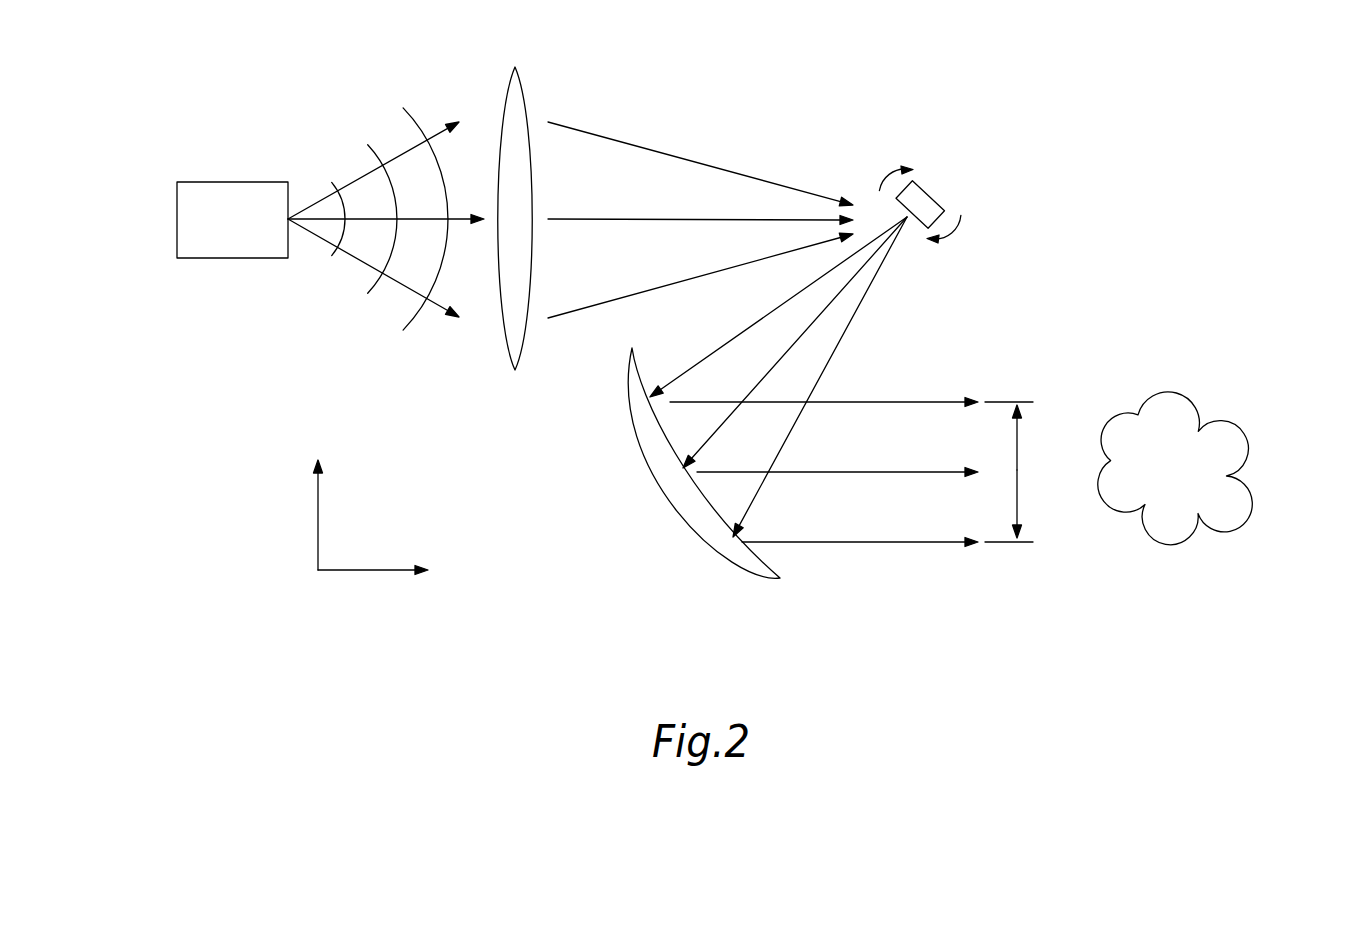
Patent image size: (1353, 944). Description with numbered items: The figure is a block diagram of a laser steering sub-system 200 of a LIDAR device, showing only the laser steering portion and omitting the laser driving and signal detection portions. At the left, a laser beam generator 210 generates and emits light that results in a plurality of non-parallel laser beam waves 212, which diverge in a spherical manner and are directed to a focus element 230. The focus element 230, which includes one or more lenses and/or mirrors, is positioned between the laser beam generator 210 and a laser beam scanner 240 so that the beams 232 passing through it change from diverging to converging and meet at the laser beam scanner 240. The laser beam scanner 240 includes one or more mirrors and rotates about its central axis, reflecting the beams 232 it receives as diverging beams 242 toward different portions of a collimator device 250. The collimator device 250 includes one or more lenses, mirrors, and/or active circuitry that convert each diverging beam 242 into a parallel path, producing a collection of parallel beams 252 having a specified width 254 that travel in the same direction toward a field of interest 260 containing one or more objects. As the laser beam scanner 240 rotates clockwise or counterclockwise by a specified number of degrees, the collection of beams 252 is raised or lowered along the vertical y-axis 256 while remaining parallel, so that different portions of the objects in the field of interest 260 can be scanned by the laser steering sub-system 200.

The laser steering sub-system 200 is at (1207, 90).
The laser beam generator 210 is at (231, 182).
The non-parallel laser beam waves 212 is at (413, 112).
The focus element 230 is at (514, 67).
The laser beam waves 232 is at (693, 162).
The laser beam scanner 240 is at (932, 190).
The diverging beams 242 is at (883, 266).
The collimator device 250 is at (620, 370).
The parallel beams 252 is at (908, 401).
The specified width 254 is at (1018, 443).
The y-axis 256 is at (319, 526).
The field of interest 260 is at (1165, 385).